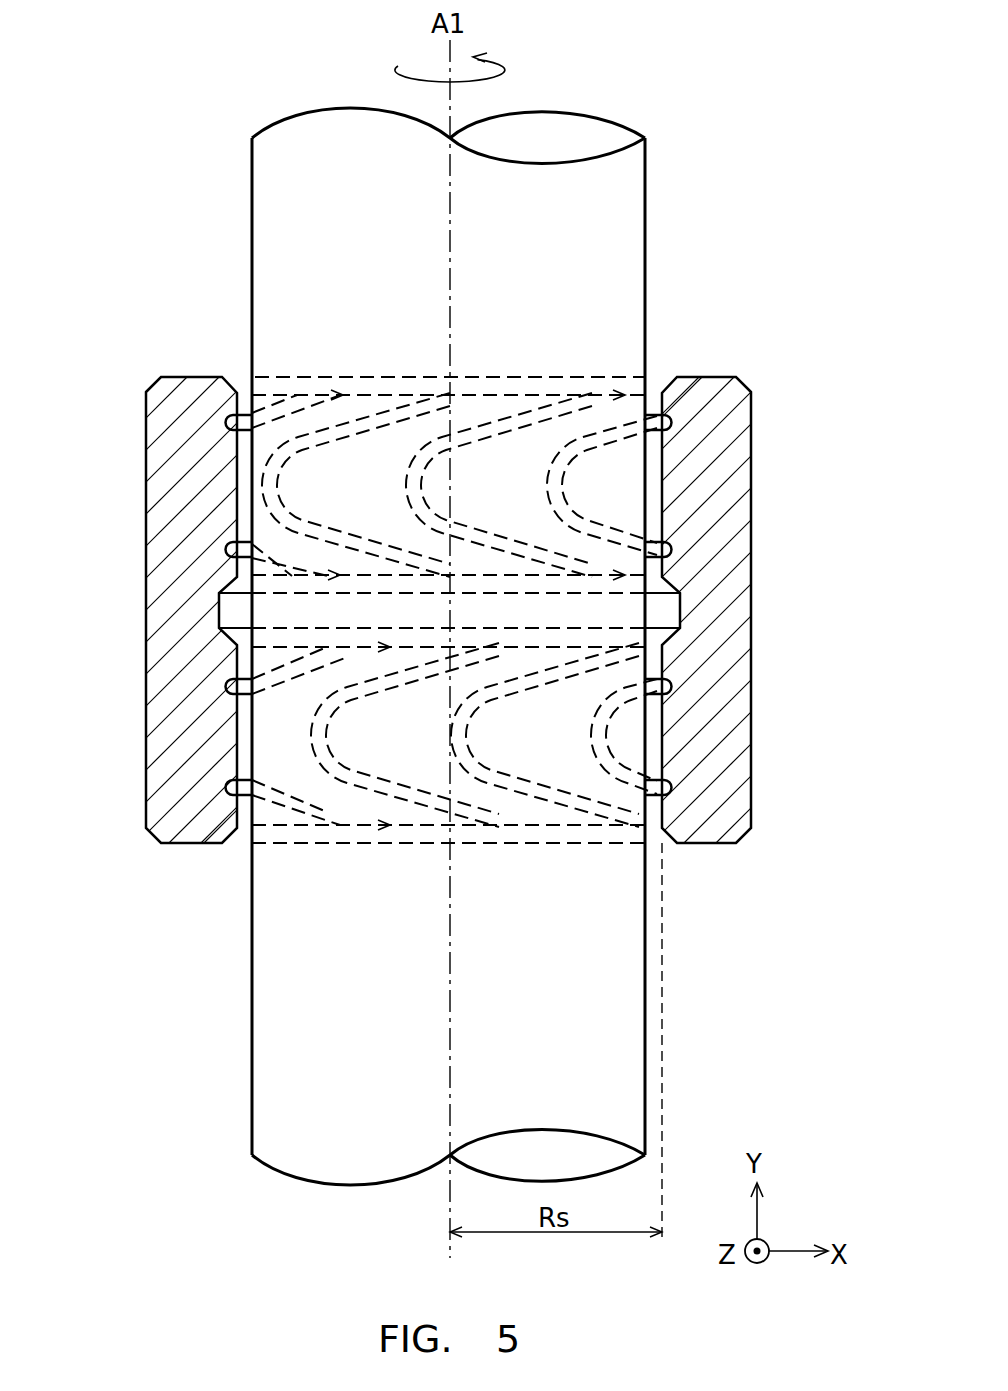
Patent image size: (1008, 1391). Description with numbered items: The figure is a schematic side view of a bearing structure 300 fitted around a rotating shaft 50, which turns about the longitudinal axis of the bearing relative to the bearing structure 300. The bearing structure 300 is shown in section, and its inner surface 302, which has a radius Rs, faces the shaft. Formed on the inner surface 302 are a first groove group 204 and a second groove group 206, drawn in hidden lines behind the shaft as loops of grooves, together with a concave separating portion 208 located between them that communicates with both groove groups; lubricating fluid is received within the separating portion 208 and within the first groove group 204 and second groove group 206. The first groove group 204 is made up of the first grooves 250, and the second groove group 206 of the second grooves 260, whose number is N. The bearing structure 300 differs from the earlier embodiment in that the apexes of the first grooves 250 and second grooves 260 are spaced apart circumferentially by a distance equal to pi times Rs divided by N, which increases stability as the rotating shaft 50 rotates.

The rotating shaft 50 is at (627, 215).
The bearing structure 300 is at (504, 565).
The inner surface 302 is at (240, 488).
The separating portion 208 is at (664, 611).
The first groove group 204 is at (628, 485).
The second groove group 206 is at (637, 735).
The first grooves 250 is at (548, 396).
The second grooves 260 is at (597, 817).